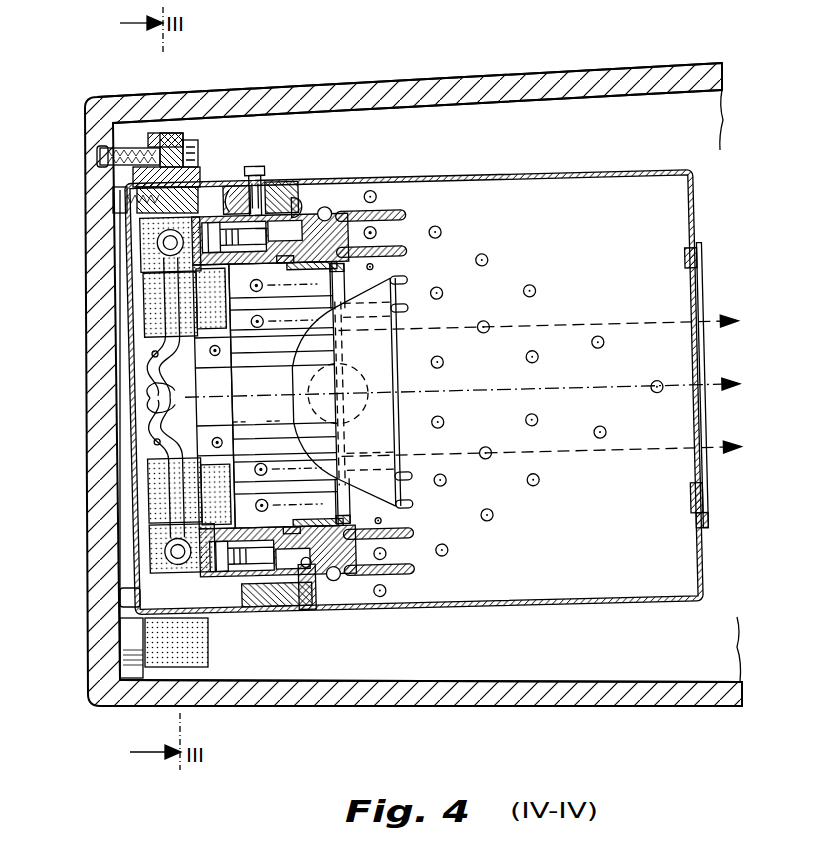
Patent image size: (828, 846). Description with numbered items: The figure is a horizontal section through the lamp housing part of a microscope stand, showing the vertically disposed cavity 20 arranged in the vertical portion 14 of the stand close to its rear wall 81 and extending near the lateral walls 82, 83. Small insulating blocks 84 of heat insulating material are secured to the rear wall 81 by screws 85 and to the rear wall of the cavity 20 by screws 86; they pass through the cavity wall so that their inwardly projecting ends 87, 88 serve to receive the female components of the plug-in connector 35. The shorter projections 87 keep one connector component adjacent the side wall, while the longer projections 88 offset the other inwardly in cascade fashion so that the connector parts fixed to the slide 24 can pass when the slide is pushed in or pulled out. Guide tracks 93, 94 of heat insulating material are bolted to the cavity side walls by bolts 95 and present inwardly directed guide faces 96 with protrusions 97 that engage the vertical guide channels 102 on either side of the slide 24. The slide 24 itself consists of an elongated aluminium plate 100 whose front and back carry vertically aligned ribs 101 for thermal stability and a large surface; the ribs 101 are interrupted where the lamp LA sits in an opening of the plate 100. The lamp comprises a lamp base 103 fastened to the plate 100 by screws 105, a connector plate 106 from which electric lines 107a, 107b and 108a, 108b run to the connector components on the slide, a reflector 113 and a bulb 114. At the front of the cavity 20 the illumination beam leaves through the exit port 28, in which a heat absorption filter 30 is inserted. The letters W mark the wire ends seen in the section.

The vertical portion 14 is at (92, 538).
The cavity 20 is at (510, 607).
The slide 24 is at (390, 235).
The exit port 28 is at (706, 480).
The heat absorption filter 30 is at (687, 437).
The plug-in connector 35 is at (207, 142).
The rear wall 81 is at (108, 642).
The lateral wall 82 is at (250, 697).
The lateral wall 83 is at (405, 85).
The insulating block 84 is at (203, 174).
The screw 85 is at (170, 148).
The screw 86 is at (113, 205).
The inwardly projecting end 87 is at (130, 237).
The inwardly projecting end 88 is at (142, 298).
The guide track 93 is at (293, 186).
The guide track 94 is at (287, 603).
The bolt 95 is at (263, 168).
The guide face 96 is at (236, 185).
The protrusion 97 is at (306, 214).
The plate 100 is at (340, 450).
The rib 101 is at (407, 257).
The guide channel 102 is at (313, 190).
The lamp base 103 is at (273, 388).
The screw 105 is at (300, 504).
The connector plate 106 is at (213, 394).
The electric line 107a is at (150, 347).
The electric line 107b is at (147, 443).
The electric line 108a is at (150, 372).
The electric line 108b is at (150, 412).
The reflector 113 is at (400, 458).
The bulb 114 is at (360, 372).
The wire ends W is at (377, 190).
The lamp LA is at (400, 410).